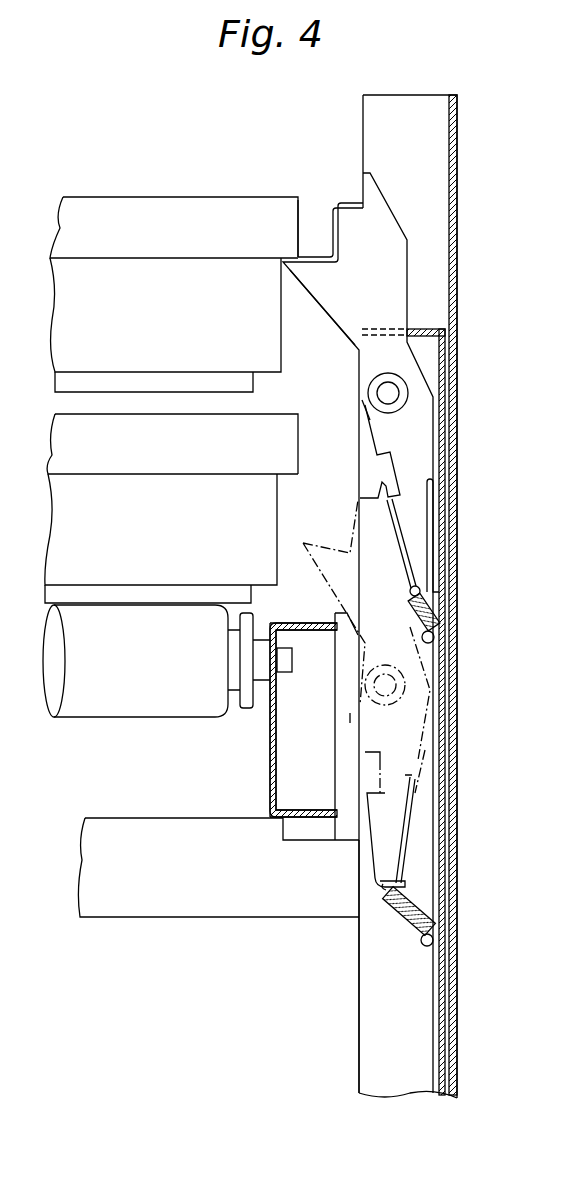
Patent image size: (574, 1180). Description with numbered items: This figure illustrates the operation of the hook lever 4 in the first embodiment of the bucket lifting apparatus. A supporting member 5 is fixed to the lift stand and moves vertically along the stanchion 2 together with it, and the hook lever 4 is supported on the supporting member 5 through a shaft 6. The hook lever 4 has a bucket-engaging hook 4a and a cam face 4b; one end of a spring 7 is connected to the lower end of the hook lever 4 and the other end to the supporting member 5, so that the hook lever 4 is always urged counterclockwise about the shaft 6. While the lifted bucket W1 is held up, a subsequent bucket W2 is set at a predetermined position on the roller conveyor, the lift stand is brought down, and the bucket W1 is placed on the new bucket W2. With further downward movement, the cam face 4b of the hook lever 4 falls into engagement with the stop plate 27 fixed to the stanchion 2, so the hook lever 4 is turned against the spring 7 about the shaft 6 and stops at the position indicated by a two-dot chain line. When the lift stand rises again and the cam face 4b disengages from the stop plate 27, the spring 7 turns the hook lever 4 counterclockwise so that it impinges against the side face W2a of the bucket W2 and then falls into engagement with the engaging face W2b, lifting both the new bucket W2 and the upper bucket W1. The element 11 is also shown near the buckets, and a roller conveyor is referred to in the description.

The stanchion 2 is at (432, 176).
The hook lever 4 is at (397, 289).
The bucket-engaging hook 4a is at (317, 252).
The cam face 4b is at (328, 314).
The supporting member 5 is at (440, 993).
The shaft 6 is at (455, 370).
The spring 7 is at (430, 614).
The roller 11 is at (125, 674).
The stop plate 27 is at (348, 713).
The bucket W1 is at (175, 327).
The subsequent bucket W2 is at (173, 544).
The side face of the bucket W2a is at (280, 501).
The engaging face of the bucket W2b is at (283, 481).